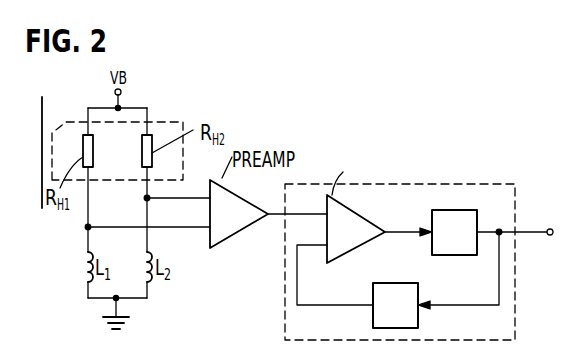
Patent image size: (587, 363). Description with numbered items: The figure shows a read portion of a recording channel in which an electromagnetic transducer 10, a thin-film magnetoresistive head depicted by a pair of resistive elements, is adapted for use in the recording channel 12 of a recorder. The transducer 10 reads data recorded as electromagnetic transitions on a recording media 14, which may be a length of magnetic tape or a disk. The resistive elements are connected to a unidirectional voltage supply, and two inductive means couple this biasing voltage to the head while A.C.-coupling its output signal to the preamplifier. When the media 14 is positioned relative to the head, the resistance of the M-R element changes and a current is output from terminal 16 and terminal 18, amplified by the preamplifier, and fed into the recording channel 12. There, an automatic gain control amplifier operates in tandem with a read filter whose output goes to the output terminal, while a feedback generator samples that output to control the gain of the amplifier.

The electromagnetic transducer 10 is at (157, 122).
The recording channel 12 is at (467, 185).
The recording media 14 is at (42, 112).
The terminal 16 is at (144, 198).
The terminal 18 is at (85, 227).